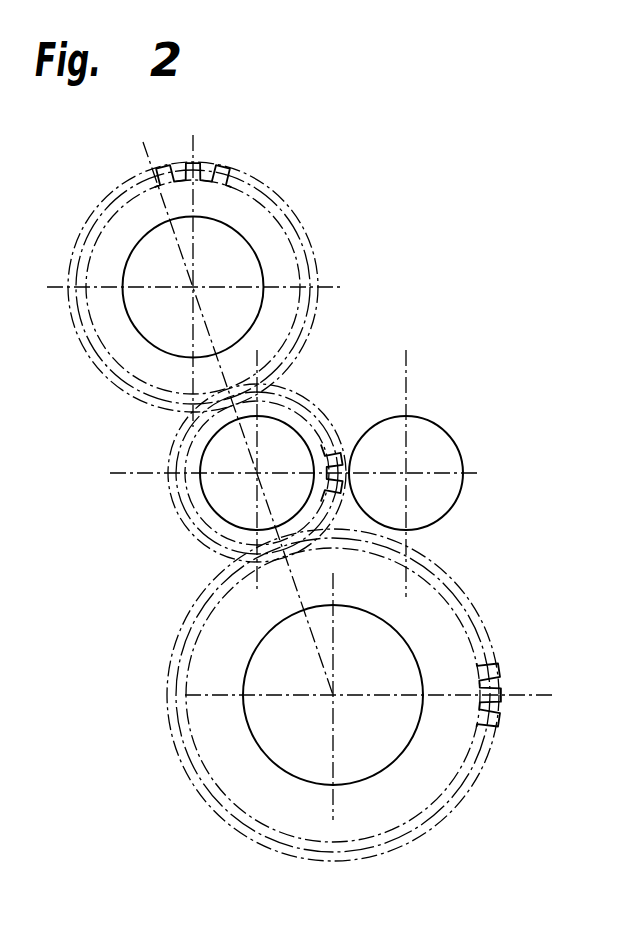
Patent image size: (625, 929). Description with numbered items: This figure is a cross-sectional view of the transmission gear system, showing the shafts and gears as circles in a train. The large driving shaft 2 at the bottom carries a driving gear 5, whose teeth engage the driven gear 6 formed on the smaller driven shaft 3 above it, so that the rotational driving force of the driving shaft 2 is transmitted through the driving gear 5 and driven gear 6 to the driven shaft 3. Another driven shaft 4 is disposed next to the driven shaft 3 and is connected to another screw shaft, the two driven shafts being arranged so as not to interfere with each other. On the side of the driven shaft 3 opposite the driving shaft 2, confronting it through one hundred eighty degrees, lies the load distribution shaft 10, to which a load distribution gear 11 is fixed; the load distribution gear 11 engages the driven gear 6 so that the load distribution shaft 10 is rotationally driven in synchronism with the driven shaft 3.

The driving shaft 2 is at (390, 765).
The driven shaft 3 is at (232, 495).
The driven shaft 4 is at (425, 448).
The driving gear 5 is at (495, 730).
The driven gear 6 is at (341, 440).
The load distribution shaft 10 is at (250, 240).
The load distribution gear 11 is at (200, 161).